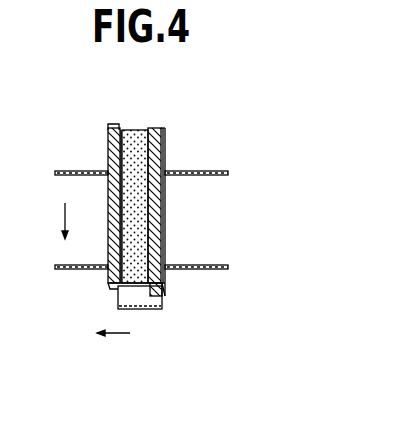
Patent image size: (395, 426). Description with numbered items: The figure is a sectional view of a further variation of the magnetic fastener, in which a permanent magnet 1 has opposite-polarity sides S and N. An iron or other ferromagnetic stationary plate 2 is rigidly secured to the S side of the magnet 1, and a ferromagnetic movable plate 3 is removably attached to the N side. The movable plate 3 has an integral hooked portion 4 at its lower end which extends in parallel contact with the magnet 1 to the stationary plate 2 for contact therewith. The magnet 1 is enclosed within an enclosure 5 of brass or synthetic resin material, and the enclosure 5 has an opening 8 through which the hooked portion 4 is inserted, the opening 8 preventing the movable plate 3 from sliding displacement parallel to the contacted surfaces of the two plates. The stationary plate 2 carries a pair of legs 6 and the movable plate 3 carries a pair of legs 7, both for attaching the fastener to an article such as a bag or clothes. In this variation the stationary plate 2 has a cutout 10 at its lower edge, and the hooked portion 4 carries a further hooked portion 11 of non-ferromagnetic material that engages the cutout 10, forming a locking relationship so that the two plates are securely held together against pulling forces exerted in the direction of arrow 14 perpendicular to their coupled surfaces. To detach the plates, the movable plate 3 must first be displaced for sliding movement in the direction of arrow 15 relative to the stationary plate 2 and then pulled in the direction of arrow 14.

The permanent magnet 1 is at (137, 131).
The stationary plate 2 is at (162, 129).
The movable plate 3 is at (113, 124).
The hooked portion 4 is at (128, 290).
The enclosure 5 is at (161, 286).
The legs 6 is at (208, 171).
The legs 7 is at (70, 171).
The opening 8 is at (118, 291).
The cutout 10 is at (166, 265).
The further hooked portion 11 is at (162, 291).
The arrow 14 is at (122, 333).
The arrow 15 is at (65, 218).